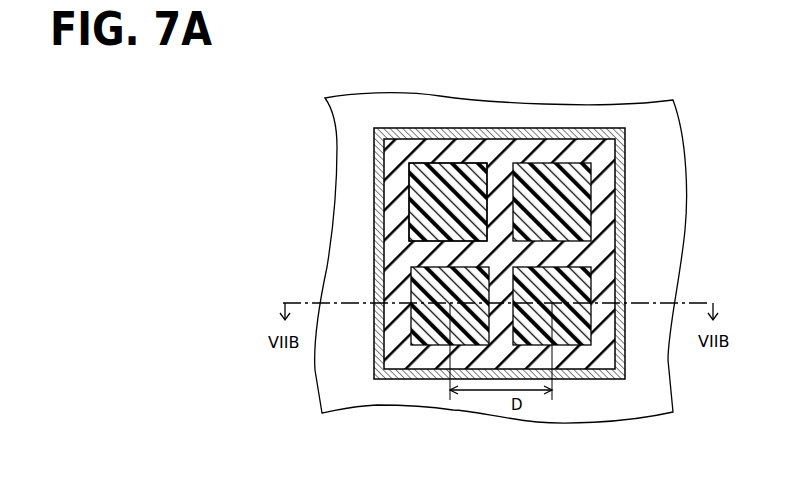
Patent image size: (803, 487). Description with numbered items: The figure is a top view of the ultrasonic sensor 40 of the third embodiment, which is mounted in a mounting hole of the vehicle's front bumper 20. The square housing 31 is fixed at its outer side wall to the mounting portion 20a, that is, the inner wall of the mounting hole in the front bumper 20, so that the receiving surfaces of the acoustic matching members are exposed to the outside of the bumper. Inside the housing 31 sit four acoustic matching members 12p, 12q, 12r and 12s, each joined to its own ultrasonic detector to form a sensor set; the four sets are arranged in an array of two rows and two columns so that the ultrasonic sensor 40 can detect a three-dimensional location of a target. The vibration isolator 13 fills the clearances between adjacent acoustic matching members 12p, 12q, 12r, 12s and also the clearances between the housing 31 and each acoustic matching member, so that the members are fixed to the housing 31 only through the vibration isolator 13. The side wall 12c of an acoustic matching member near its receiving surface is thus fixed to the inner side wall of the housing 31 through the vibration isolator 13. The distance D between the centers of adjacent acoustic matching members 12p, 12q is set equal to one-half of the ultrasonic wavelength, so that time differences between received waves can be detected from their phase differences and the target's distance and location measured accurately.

The ultrasonic sensor 40 is at (639, 99).
The front bumper 20 is at (587, 111).
The mounting portion 20a is at (381, 375).
The housing 31 is at (375, 187).
The vibration isolator 13 is at (607, 352).
The side wall of acoustic matching member 12c is at (404, 187).
The acoustic matching member 12r is at (459, 173).
The acoustic matching member 12s is at (524, 175).
The acoustic matching member 12p is at (430, 342).
The acoustic matching member 12q is at (567, 355).